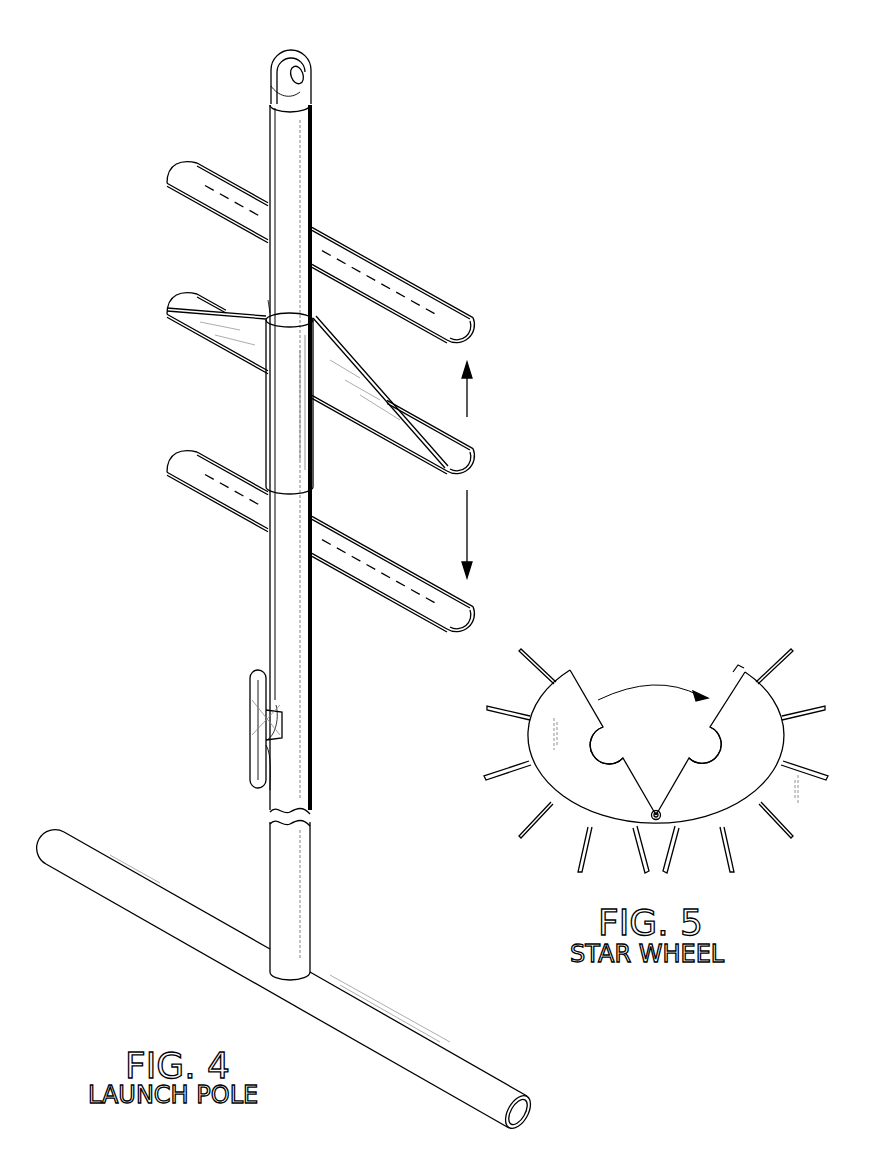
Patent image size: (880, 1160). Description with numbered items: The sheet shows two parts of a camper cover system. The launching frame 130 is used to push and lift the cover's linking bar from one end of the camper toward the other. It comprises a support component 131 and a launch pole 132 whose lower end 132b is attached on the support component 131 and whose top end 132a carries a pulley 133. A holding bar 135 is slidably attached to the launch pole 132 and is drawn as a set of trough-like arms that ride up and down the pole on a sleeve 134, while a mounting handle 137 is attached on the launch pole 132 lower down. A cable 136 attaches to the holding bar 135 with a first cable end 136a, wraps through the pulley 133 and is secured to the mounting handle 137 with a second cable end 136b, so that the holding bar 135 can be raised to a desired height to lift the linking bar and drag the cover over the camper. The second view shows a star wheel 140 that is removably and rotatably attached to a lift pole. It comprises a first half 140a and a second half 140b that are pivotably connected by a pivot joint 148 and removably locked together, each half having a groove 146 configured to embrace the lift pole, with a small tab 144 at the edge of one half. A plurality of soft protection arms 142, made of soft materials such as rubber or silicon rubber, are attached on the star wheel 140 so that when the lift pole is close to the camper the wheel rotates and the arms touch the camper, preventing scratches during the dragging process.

In FIG. 4, the launching frame 130 is at (168, 705).
In FIG. 4, the support component 131 is at (88, 860).
In FIG. 4, the launch pole 132 is at (292, 890).
In FIG. 4, the top end 132a is at (298, 115).
In FIG. 4, the lower end 132b is at (296, 968).
In FIG. 4, the pulley 133 is at (283, 58).
In FIG. 4, the sliding sleeve 134 is at (268, 418).
In FIG. 4, the holding bar 135 is at (450, 308).
In FIG. 4, the cable 136 is at (272, 580).
In FIG. 4, the first cable end 136a is at (315, 298).
In FIG. 4, the second cable end 136b is at (277, 692).
In FIG. 4, the mounting handle 137 is at (268, 690).
In FIG. 5, the star wheel 140 is at (663, 676).
In FIG. 5, the first half 140a is at (577, 685).
In FIG. 5, the second half 140b is at (743, 712).
In FIG. 5, the soft protection arms 142 is at (783, 653).
In FIG. 5, the tab 144 is at (738, 668).
In FIG. 5, the groove 146 is at (713, 740).
In FIG. 5, the pivot joint 148 is at (668, 818).